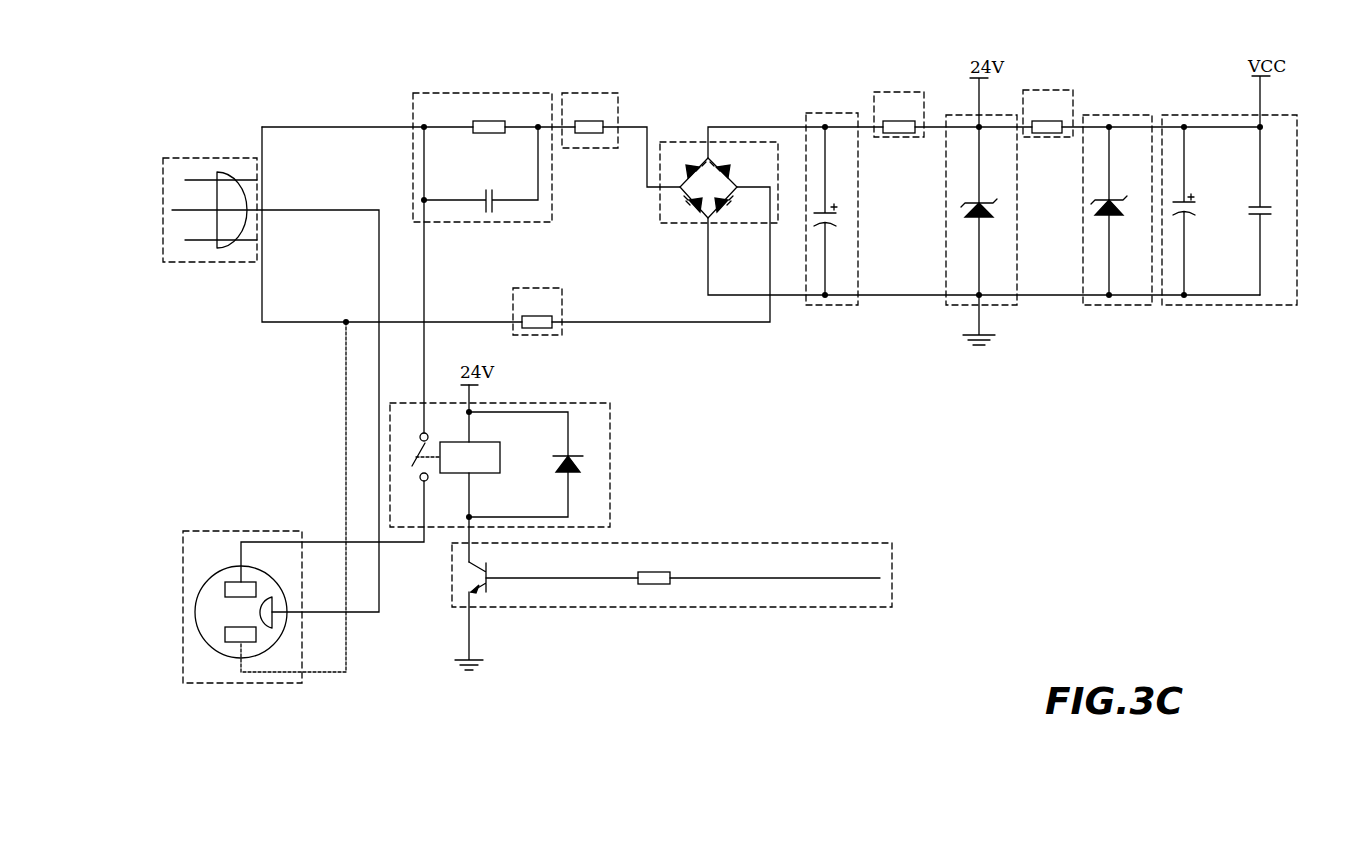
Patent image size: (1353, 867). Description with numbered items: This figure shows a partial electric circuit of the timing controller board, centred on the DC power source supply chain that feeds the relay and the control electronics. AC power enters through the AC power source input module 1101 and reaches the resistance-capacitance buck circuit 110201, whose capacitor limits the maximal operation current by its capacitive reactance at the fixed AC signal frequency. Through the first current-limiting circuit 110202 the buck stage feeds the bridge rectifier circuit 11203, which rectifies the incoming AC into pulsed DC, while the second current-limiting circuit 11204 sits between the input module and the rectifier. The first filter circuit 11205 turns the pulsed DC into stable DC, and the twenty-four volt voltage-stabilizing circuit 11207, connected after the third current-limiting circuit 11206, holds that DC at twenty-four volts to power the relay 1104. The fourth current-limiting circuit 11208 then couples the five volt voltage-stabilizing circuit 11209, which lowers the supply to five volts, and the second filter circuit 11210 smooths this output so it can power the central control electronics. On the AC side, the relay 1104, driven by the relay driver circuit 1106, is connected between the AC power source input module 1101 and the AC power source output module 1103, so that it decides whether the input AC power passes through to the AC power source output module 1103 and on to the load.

The alternative current (AC) power source input module 1101 is at (209, 158).
The resistance-capacitance buck circuit 110201 is at (460, 93).
The first current-limiting circuit 110202 is at (583, 93).
The bridge rectifier circuit 11203 is at (678, 140).
The second current-limiting circuit 11204 is at (545, 288).
The first filter circuit 11205 is at (826, 306).
The third current-limiting circuit 11206 is at (900, 92).
The 24V voltage-stabilizing circuit 11207 is at (997, 306).
The fourth current-limiting circuit 11208 is at (1050, 90).
The 5V voltage-stabilizing circuit 11209 is at (1110, 115).
The second filter circuit 11210 is at (1210, 306).
The AC power source output module 1103 is at (262, 531).
The relay 1104 is at (612, 492).
The relay driver circuit 1106 is at (750, 607).